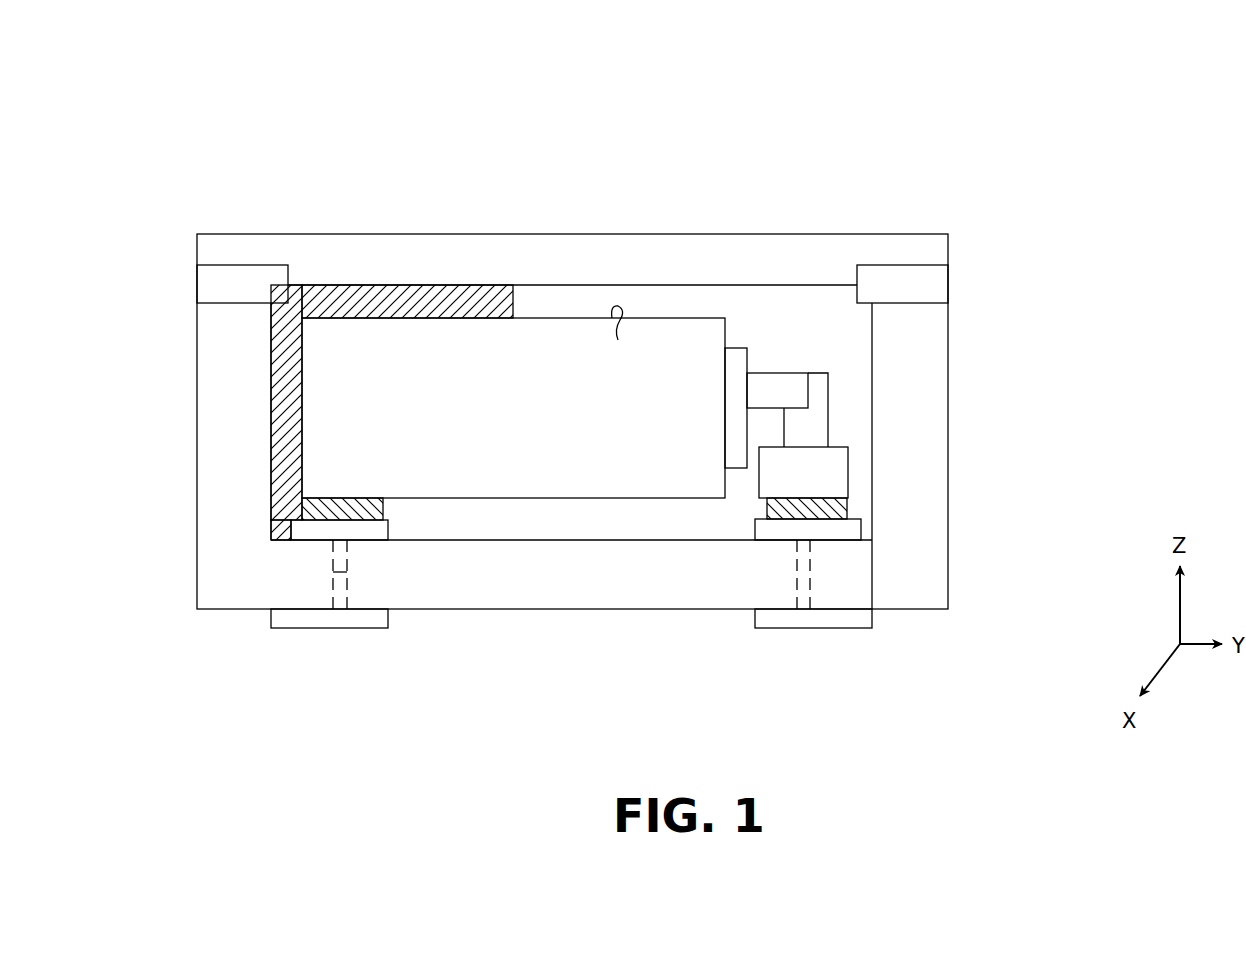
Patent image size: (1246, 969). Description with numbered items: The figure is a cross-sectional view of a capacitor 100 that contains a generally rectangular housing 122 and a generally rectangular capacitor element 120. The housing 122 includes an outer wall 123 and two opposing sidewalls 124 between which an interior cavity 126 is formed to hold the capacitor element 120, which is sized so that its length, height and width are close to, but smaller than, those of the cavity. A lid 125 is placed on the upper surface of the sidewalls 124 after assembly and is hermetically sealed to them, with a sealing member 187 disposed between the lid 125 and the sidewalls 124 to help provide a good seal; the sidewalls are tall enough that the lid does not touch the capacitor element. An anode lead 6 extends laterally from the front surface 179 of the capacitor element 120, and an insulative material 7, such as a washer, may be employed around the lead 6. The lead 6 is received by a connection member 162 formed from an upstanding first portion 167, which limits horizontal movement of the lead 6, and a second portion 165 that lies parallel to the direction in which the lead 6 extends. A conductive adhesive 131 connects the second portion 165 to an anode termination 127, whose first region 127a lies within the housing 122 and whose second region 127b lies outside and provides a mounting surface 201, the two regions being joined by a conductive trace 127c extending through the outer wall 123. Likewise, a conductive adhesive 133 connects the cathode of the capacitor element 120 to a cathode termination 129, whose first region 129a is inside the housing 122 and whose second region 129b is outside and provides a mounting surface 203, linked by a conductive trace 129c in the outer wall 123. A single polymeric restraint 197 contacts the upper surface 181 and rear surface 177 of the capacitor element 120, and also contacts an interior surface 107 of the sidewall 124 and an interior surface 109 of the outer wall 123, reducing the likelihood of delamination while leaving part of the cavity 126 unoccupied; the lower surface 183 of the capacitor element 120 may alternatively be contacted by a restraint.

The capacitor 100 is at (960, 165).
The interior surface of sidewall 107 is at (285, 330).
The interior surface of outer wall 109 is at (528, 520).
The capacitor element 120 is at (532, 425).
The housing 122 is at (170, 432).
The outer wall 123 is at (557, 595).
The sidewalls 124 is at (206, 376).
The lid 125 is at (600, 262).
The interior cavity 126 is at (737, 308).
The anode termination 127 is at (905, 625).
The first region of anode termination 127a is at (772, 528).
The second region of anode termination 127b is at (785, 618).
The conductive trace 127c is at (805, 587).
The cathode termination 129 is at (250, 630).
The first region of cathode termination 129a is at (310, 528).
The second region of cathode termination 129b is at (355, 620).
The conductive trace 129c is at (343, 573).
The conductive adhesive 131 is at (830, 510).
The conductive adhesive 133 is at (385, 503).
The connection member 162 is at (838, 442).
The second portion 165 is at (823, 484).
The first portion 167 is at (817, 410).
The anode lead 6 is at (781, 403).
The insulative material 7 is at (736, 376).
The rear surface 177 is at (302, 405).
The front surface 179 is at (725, 392).
The upper surface 181 is at (625, 340).
The lower surface 183 is at (640, 505).
The sealing member 187 is at (217, 292).
The polymeric restraint 197 is at (445, 300).
The mounting surface 201 is at (825, 628).
The mounting surface 203 is at (305, 628).